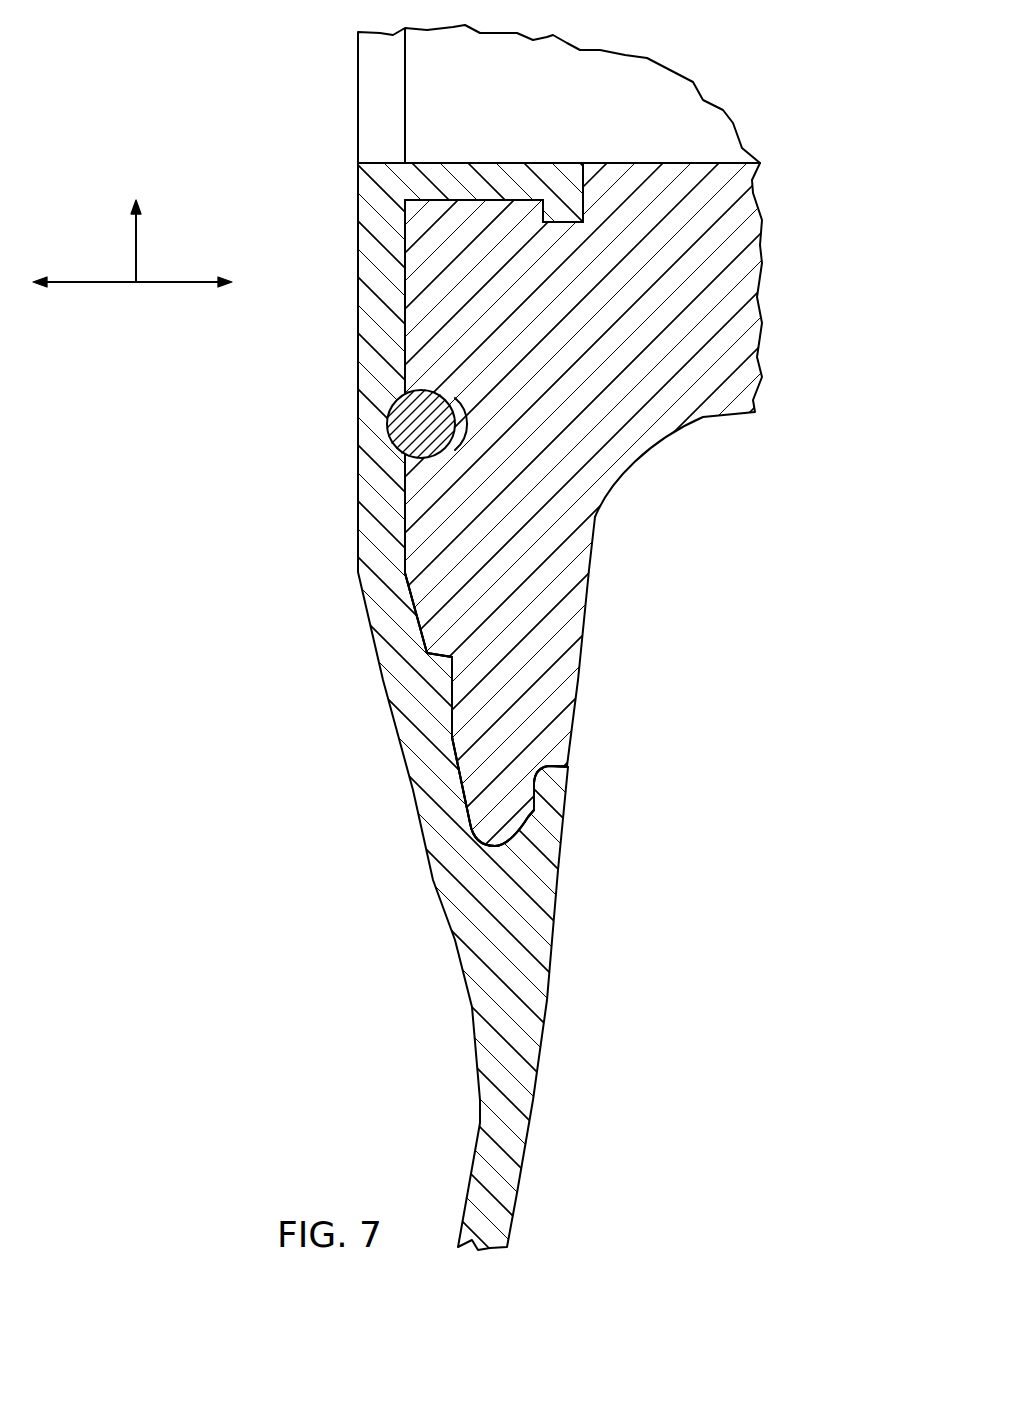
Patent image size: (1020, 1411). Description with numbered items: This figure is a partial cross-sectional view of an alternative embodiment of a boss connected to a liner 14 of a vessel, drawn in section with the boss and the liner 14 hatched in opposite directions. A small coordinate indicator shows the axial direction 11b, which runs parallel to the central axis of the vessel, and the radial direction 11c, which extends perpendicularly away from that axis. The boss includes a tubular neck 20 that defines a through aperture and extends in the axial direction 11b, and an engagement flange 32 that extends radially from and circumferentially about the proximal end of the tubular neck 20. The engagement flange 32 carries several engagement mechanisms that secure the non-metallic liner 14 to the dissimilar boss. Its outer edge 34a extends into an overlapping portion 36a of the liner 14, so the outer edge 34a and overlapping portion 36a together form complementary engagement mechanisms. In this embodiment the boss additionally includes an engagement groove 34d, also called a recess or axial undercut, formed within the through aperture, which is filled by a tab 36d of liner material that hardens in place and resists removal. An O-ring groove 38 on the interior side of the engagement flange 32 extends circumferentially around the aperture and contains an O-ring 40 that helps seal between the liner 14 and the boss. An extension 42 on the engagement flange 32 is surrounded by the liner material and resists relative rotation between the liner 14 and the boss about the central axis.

The liner 14 is at (525, 1008).
The tubular neck 20 is at (707, 411).
The engagement flange 32 is at (558, 618).
The outer edge of engagement flange 34a is at (510, 829).
The engagement groove 34d is at (569, 223).
The overlapping portion of liner 36a is at (553, 783).
The upper tab 36d is at (562, 208).
The O-ring groove 38 is at (456, 425).
The O-ring 40 is at (403, 420).
The extension 42 is at (453, 690).
The axial direction 11b is at (172, 285).
The radial direction 11c is at (137, 248).